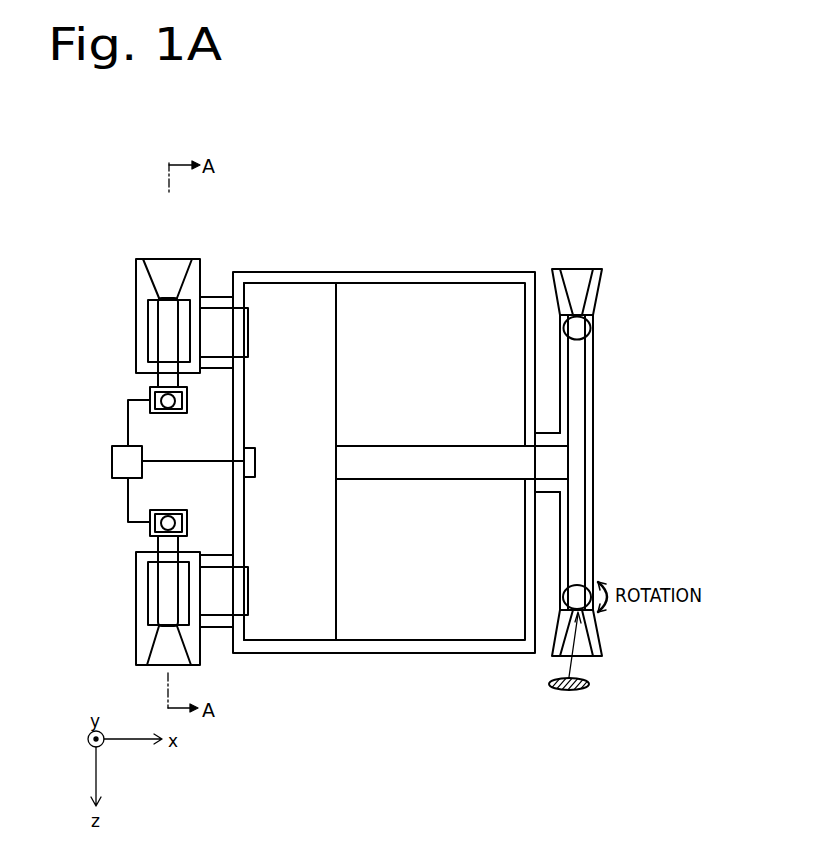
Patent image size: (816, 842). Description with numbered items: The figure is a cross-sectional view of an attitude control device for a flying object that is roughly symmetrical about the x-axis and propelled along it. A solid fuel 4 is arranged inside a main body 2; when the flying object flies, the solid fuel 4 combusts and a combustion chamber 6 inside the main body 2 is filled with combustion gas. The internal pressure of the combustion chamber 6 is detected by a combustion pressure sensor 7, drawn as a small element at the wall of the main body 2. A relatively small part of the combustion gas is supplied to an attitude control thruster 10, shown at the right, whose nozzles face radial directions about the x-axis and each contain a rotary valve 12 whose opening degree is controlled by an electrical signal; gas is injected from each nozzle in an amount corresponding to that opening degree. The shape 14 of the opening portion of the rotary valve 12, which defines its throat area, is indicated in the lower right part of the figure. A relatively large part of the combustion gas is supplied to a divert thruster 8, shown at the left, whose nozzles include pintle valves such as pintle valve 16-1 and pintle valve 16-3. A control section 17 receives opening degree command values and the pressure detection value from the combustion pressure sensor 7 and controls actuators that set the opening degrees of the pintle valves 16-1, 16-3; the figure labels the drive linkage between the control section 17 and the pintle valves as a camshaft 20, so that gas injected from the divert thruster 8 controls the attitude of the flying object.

The main body 2 is at (318, 272).
The solid fuel 4 is at (400, 308).
The combustion chamber 6 is at (265, 620).
The combustion pressure sensor 7 is at (270, 460).
The divert thruster 8 is at (230, 157).
The attitude control thruster 10 is at (643, 265).
The rotary valve 12 is at (590, 330).
The shape of an opening portion of the rotary valve 14 is at (589, 684).
The pintle valve 16-1 is at (142, 263).
The pintle valve 16-3 is at (136, 605).
The control section 17 is at (112, 460).
The camshaft 20 is at (150, 400).